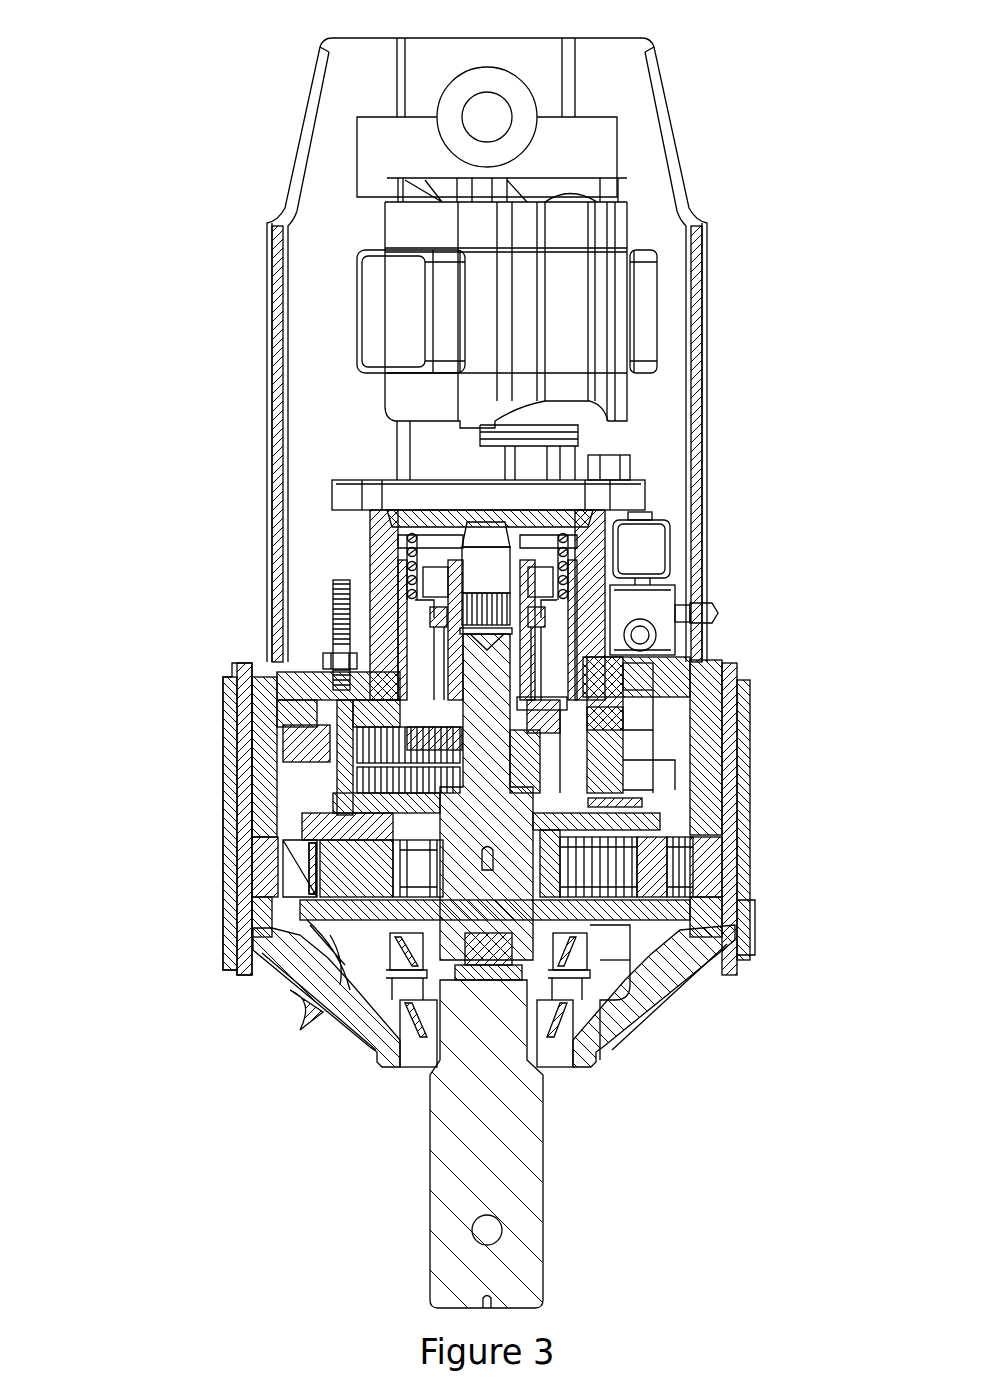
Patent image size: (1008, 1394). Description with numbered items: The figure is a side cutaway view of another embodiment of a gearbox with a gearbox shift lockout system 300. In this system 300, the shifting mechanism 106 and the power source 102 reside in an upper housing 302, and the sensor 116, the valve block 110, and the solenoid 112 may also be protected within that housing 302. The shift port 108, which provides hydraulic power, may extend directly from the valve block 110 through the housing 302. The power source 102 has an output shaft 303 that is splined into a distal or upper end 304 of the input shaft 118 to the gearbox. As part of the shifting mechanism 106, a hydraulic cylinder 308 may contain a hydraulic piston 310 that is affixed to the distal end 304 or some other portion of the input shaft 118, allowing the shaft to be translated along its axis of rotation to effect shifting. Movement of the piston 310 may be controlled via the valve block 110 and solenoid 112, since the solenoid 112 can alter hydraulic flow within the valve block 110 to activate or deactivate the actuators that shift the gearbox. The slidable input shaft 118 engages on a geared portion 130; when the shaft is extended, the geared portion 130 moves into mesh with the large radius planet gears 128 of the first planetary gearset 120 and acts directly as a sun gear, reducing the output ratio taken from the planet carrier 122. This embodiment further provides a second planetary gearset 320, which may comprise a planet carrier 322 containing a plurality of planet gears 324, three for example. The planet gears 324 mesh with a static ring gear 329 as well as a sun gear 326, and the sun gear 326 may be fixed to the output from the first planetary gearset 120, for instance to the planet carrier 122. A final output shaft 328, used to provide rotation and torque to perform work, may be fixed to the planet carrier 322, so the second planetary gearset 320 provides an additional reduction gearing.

The gearbox with gearbox shift lockout system 300 is at (158, 46).
The upper housing 302 is at (268, 335).
The power source 102 is at (655, 297).
The output shaft 303 is at (487, 560).
The shifting mechanism 106 is at (353, 522).
The hydraulic cylinder 308 is at (598, 545).
The hydraulic piston 310 is at (413, 633).
The solenoid 112 is at (672, 562).
The distal end 304 is at (447, 651).
The shift port 108 is at (720, 615).
The sensor 116 is at (333, 642).
The valve block 110 is at (657, 641).
The input shaft 118 is at (353, 703).
The geared portion 130 is at (565, 780).
The large radius planet gear 128 is at (373, 800).
The planet carrier 322 is at (665, 824).
The first planetary gearset 120 is at (333, 797).
The planet carrier 122 is at (360, 802).
The static ring gear 329 is at (742, 870).
The sun gear 326 is at (385, 897).
The planet gears 324 is at (623, 923).
The second planetary gearset 320 is at (593, 972).
The final output shaft 328 is at (437, 1205).